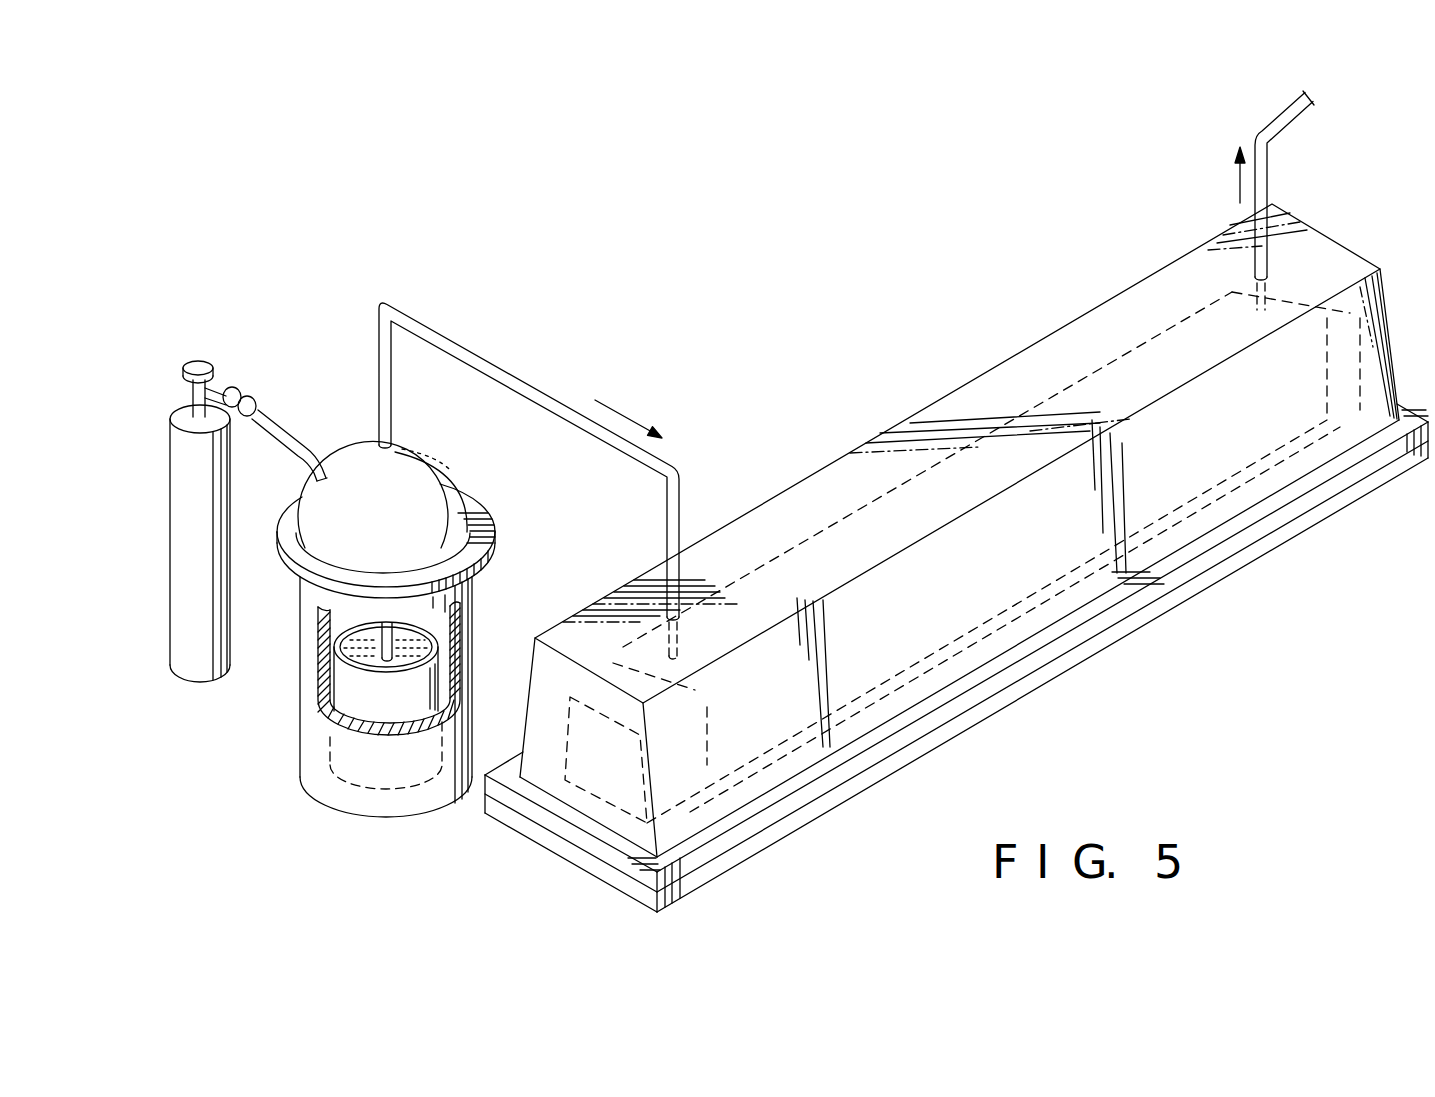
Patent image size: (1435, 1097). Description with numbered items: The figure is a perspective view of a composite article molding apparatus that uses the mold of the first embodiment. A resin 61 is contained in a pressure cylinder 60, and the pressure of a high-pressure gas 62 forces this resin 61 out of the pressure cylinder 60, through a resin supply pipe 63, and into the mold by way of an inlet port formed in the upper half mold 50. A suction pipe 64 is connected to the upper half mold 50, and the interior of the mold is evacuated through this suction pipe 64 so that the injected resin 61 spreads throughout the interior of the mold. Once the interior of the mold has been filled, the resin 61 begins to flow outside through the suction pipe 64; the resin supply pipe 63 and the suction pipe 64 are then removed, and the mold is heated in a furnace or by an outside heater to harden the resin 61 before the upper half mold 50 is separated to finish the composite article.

The upper half mold 50 is at (1017, 375).
The pressure cylinder 60 is at (315, 757).
The resin 61 is at (363, 660).
The high-pressure gas 62 is at (188, 553).
The resin supply pipe 63 is at (508, 378).
The suction pipe 64 is at (1280, 116).